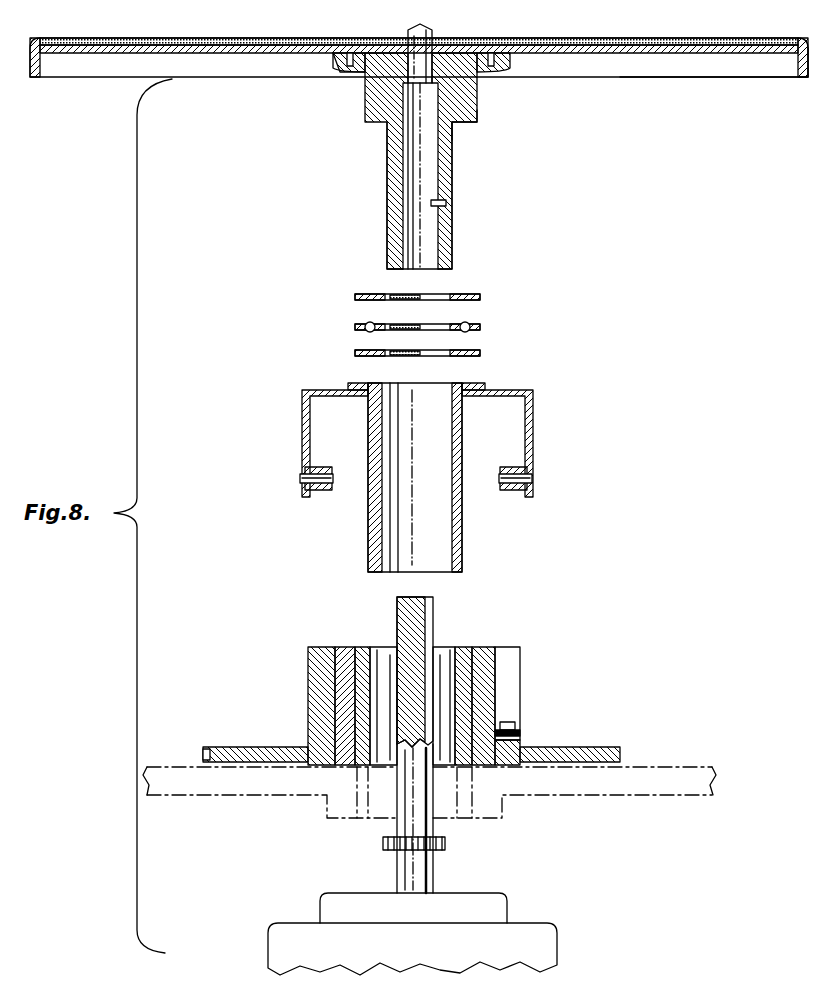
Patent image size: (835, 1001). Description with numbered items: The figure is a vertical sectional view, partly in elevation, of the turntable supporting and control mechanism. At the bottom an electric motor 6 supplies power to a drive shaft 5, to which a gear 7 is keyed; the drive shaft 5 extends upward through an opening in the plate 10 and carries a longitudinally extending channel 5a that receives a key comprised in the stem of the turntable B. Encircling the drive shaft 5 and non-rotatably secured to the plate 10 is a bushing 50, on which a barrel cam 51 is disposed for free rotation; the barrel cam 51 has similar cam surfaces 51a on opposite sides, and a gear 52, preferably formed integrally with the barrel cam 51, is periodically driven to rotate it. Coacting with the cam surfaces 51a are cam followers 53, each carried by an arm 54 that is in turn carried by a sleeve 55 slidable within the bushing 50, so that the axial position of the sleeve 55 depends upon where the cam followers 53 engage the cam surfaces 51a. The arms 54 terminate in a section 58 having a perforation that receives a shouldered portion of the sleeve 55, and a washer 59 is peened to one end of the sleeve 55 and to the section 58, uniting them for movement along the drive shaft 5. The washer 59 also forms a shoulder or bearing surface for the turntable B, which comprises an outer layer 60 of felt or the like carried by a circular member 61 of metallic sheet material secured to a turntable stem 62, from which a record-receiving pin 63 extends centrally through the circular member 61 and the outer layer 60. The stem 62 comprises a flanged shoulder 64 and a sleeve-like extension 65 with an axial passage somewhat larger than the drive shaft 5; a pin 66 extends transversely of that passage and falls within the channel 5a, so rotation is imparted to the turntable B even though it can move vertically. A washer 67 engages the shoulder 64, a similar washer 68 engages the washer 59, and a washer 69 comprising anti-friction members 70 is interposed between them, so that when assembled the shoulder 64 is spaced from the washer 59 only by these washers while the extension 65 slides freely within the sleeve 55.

The outer layer 60 is at (528, 45).
The circular member 61 is at (572, 55).
The turntable B is at (726, 55).
The turntable stem 62 is at (368, 111).
The record-receiving pin 63 is at (405, 33).
The shoulder 64 is at (458, 126).
The sleeve-like extension 65 is at (452, 237).
The pin 66 is at (433, 203).
The washer 67 is at (365, 294).
The washer 68 is at (482, 352).
The washer 69 is at (480, 326).
The anti-friction members 70 is at (365, 327).
The section 58 is at (345, 385).
The washer 59 is at (485, 385).
The arm 54 is at (300, 428).
The cam follower 53 is at (318, 490).
The sleeve 55 is at (462, 545).
The channel 5a is at (428, 627).
The barrel cam 51 is at (320, 656).
The bushing 50 is at (358, 652).
The cam surface 51a is at (330, 735).
The gear 52 is at (255, 750).
The plate 10 is at (670, 800).
The gear 7 is at (450, 845).
The drive shaft 5 is at (395, 868).
The electric motor 6 is at (275, 958).